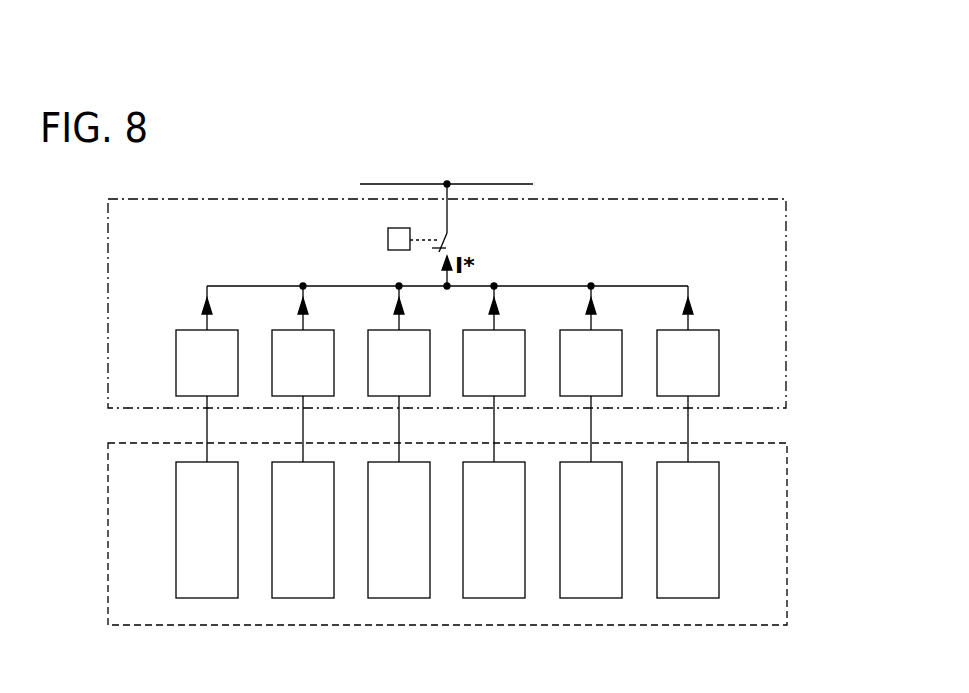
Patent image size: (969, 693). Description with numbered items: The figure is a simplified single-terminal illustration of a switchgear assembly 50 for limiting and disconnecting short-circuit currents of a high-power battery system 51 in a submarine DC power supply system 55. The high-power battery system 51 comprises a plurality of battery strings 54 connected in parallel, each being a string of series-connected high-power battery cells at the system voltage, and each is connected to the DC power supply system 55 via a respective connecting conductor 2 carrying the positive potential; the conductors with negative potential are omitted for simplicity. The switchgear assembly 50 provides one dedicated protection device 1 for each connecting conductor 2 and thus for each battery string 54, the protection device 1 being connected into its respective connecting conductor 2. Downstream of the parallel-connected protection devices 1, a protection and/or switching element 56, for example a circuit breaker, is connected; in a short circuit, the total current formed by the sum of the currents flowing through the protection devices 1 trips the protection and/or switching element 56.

The protection device 1 is at (176, 360).
The connecting conductor 2 is at (207, 429).
The switchgear assembly 50 is at (786, 250).
The high-power battery system 51 is at (787, 493).
The battery string 54 is at (207, 598).
The DC power supply system 55 is at (481, 184).
The protection and/or switching element 56 is at (387, 239).